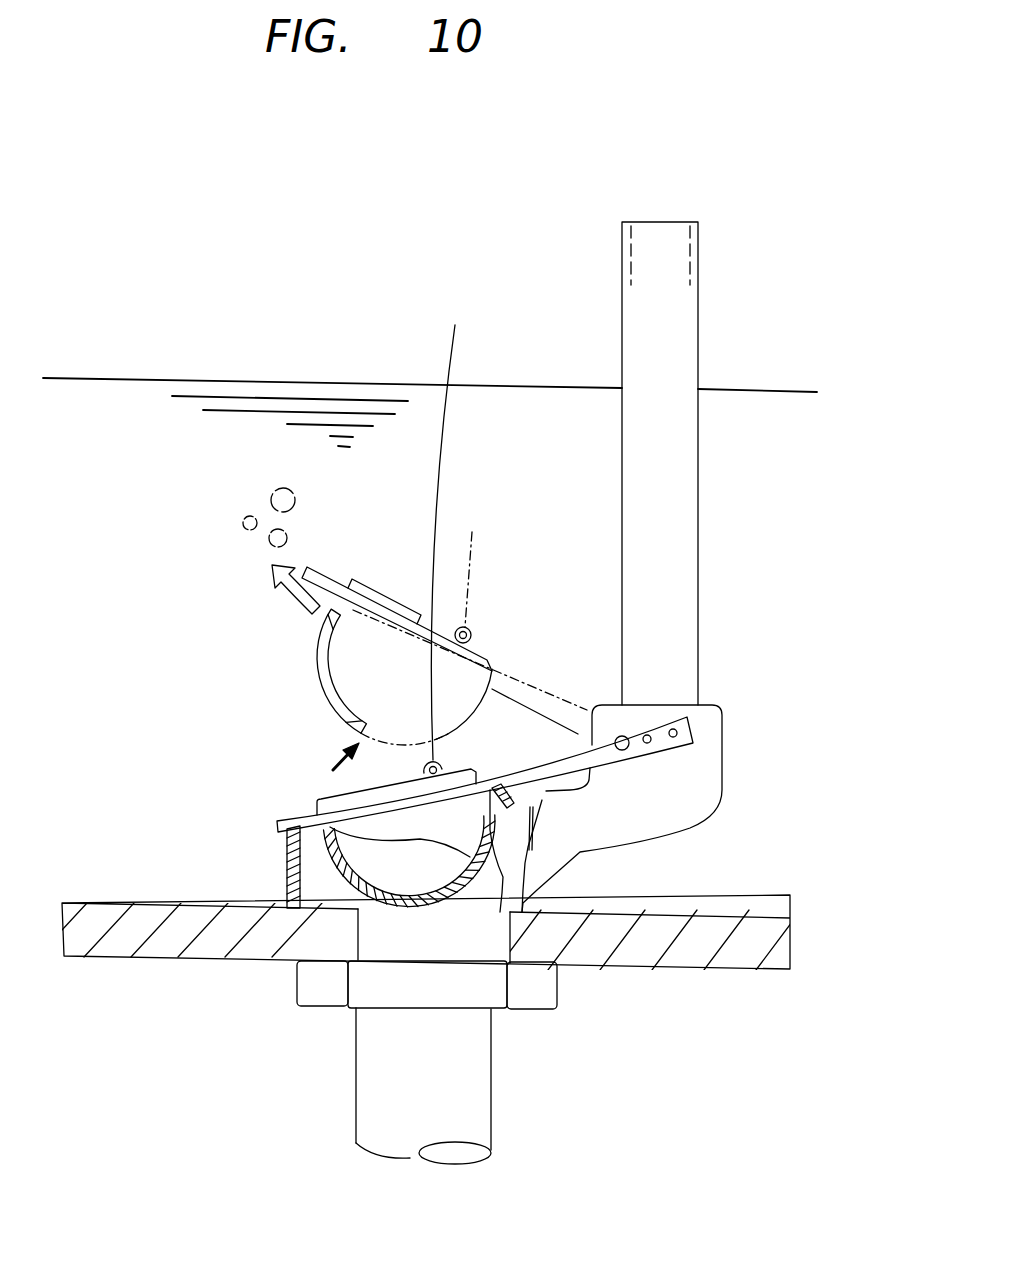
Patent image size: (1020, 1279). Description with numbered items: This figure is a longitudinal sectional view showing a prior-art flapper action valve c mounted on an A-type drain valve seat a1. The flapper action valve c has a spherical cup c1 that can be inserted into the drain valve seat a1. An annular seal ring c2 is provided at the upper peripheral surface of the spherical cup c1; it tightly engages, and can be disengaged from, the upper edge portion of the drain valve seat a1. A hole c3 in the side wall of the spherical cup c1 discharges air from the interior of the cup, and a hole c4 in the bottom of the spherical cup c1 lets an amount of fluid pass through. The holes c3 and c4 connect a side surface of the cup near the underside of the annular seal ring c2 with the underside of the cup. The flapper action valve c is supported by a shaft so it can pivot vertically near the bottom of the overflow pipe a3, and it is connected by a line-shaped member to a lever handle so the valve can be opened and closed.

The valve body a1 is at (677, 797).
The overflow pipe a3 is at (692, 635).
The flapper action valve c is at (320, 807).
The spherical cup c1 is at (287, 897).
The annular seal ring c2 is at (278, 818).
The hole c3 is at (287, 850).
The hole c4 is at (427, 913).